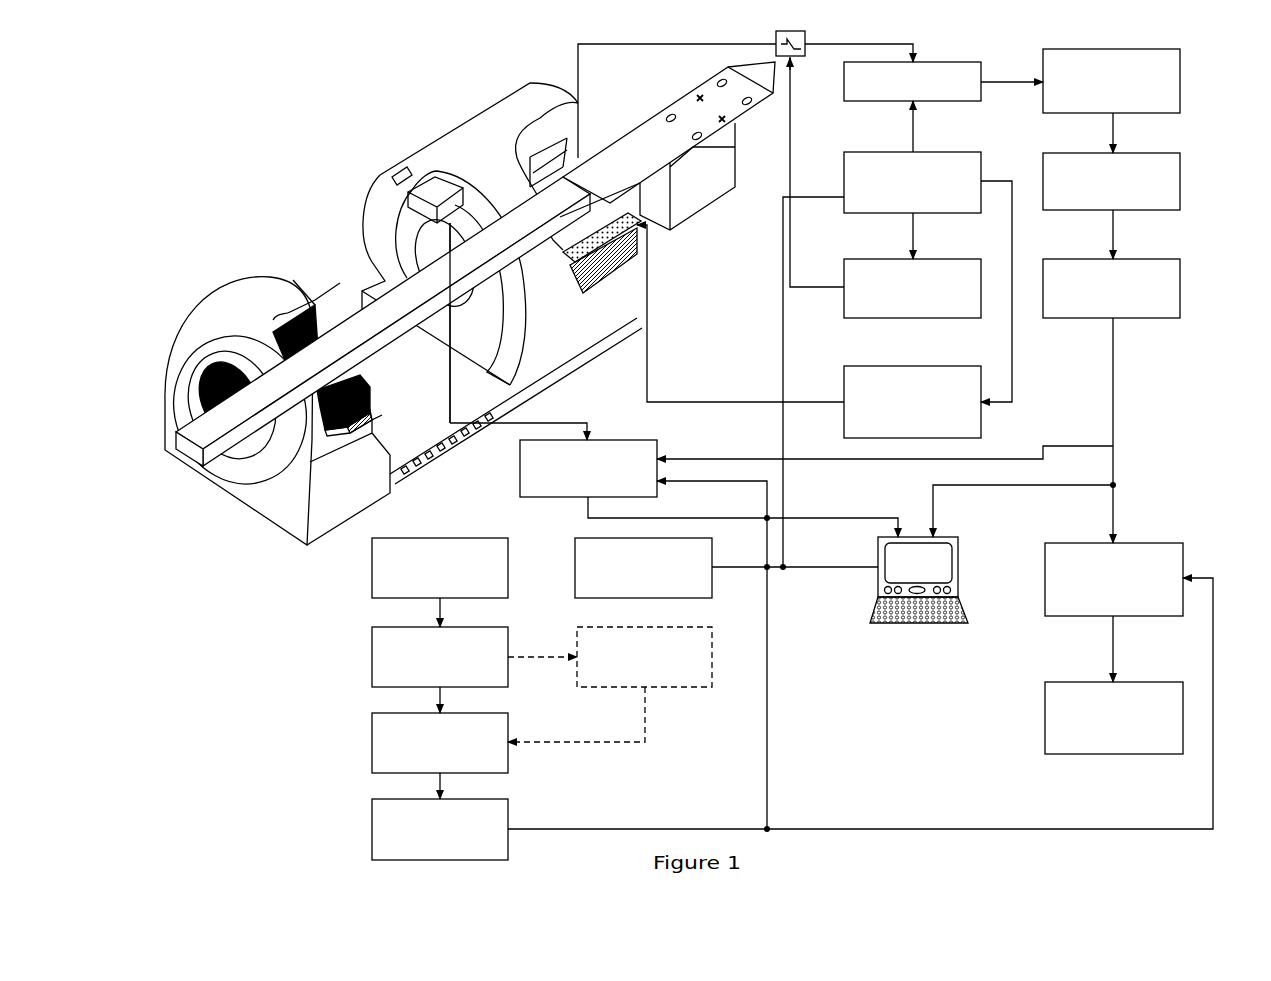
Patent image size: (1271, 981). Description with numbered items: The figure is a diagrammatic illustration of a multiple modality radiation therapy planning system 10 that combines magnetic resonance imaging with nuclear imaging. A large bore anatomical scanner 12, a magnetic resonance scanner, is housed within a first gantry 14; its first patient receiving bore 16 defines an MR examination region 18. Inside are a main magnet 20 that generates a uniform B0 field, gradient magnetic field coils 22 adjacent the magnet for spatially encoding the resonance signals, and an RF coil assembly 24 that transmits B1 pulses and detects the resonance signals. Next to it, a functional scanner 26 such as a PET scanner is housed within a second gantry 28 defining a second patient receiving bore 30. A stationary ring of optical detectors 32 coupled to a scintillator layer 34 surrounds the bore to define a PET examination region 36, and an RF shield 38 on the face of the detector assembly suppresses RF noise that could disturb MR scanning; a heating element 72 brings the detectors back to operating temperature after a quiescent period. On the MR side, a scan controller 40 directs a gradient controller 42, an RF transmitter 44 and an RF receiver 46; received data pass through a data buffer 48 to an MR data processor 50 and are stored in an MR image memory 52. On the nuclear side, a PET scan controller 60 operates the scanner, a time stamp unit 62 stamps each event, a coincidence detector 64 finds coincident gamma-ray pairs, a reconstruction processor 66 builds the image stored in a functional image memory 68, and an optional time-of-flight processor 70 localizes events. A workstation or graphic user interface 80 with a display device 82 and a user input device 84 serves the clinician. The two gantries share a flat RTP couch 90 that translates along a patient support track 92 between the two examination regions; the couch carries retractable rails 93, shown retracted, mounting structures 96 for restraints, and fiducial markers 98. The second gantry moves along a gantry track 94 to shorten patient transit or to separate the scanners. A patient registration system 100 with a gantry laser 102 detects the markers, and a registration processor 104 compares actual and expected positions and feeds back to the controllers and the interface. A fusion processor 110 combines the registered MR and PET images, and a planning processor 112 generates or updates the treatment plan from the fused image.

The radiation therapy planning system 10 is at (176, 112).
The anatomical scanner 12 is at (413, 135).
The first gantry 14 is at (493, 103).
The first patient receiving bore 16 is at (413, 235).
The MR examination region 18 is at (462, 273).
The main magnet 20 is at (614, 276).
The gradient magnetic field coils 22 is at (563, 252).
The RF coil assembly 24 is at (540, 156).
The functional scanner 26 is at (215, 295).
The second gantry 28 is at (256, 288).
The second patient receiving bore 30 is at (203, 373).
The optical detectors 32 is at (374, 410).
The scintillator layer 34 is at (372, 388).
The PET examination region 36 is at (252, 411).
The RF shield 38 is at (317, 330).
The scan controller 40 is at (844, 168).
The gradient controller 42 is at (844, 388).
The RF transmitter 44 is at (844, 273).
The RF receiver 46 is at (983, 99).
The data buffer 48 is at (1182, 80).
The MR data processor 50 is at (1182, 180).
The MR image memory 52 is at (1182, 290).
The PET scan controller 60 is at (713, 590).
The time stamp unit 62 is at (510, 575).
The coincidence detector 64 is at (372, 655).
The reconstruction processor 66 is at (510, 725).
The functional image memory 68 is at (372, 838).
The time-of-flight processor 70 is at (713, 670).
The heating element 72 is at (375, 428).
The workstation or graphic user interface 80 is at (888, 583).
The display device 82 is at (878, 558).
The user input device 84 is at (870, 612).
The radiation therapy planning couch 90 is at (666, 148).
The patient support track 92 is at (383, 321).
The retractable rails 93 is at (808, 95).
The gantry track 94 is at (420, 475).
The mounting structures 96 is at (668, 113).
The fiducial markers 98 is at (700, 95).
The patient registration system 100 is at (459, 173).
The gantry laser 102 is at (435, 198).
The registration processor 104 is at (657, 442).
The fusion processor 110 is at (1045, 558).
The planning processor 112 is at (1045, 694).